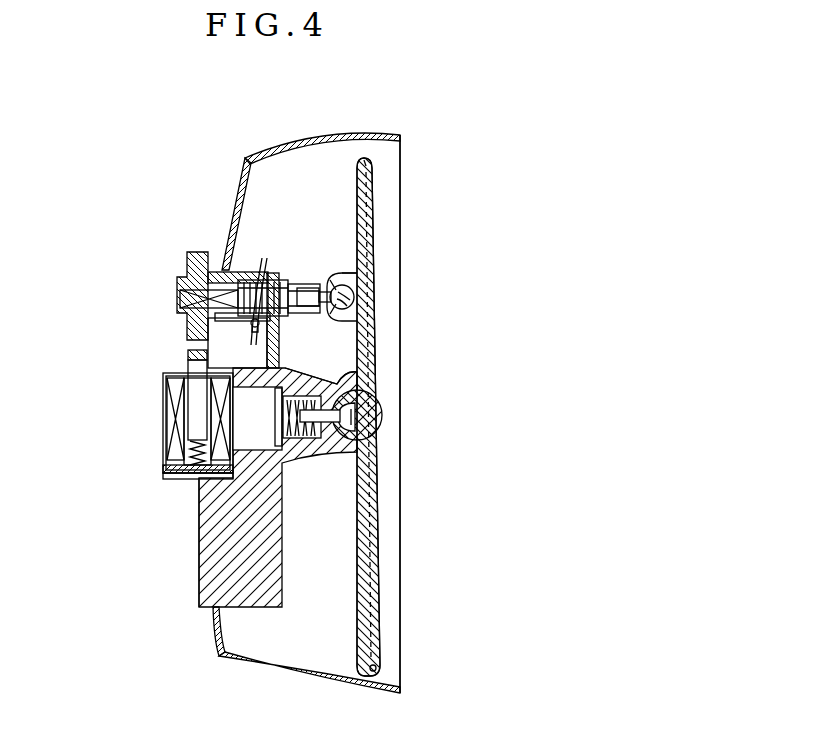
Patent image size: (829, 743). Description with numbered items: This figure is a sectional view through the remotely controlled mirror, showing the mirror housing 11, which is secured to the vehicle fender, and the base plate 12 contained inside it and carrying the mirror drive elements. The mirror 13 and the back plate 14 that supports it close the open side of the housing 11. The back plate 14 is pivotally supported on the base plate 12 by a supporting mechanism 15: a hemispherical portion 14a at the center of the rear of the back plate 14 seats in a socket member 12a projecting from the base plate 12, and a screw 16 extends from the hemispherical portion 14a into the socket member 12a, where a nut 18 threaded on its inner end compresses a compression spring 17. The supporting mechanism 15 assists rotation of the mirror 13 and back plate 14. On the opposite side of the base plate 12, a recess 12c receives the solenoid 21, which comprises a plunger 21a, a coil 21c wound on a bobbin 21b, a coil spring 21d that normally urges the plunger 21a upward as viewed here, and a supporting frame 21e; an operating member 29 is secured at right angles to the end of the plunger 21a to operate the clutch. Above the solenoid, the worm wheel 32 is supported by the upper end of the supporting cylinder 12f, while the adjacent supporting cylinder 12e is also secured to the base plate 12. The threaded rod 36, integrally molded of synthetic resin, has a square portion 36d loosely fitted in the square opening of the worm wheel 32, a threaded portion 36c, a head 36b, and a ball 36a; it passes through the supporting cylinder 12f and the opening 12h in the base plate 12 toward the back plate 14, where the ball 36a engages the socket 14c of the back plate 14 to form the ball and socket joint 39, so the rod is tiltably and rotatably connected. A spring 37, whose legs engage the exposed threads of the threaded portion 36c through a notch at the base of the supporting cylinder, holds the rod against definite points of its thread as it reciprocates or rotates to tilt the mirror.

The mirror housing 11 is at (386, 133).
The base plate 12 is at (265, 590).
The socket member 12a is at (348, 375).
The recess 12c is at (198, 493).
The supporting cylinder 12e is at (250, 331).
The supporting cylinder 12f is at (233, 273).
The opening 12h is at (303, 302).
The mirror 13 is at (372, 286).
The back plate 14 is at (371, 178).
The hemispherical portion 14a is at (360, 428).
The socket 14c is at (355, 275).
The supporting mechanism 15 is at (338, 471).
The screw 16 is at (338, 447).
The compression spring 17 is at (294, 441).
The nut 18 is at (276, 431).
The solenoid 21 is at (152, 383).
The plunger 21a is at (194, 366).
The bobbin 21b is at (165, 469).
The coil 21c is at (167, 415).
The coil spring 21d is at (188, 452).
The supporting frame 21e is at (166, 477).
The operating member 29 is at (189, 345).
The worm wheel 32 is at (188, 261).
The threaded rod 36 is at (309, 353).
The ball 36a is at (354, 298).
The head 36b is at (325, 290).
The threaded portion 36c is at (273, 274).
The square portion 36d is at (186, 298).
The spring 37 is at (256, 318).
The ball and socket joint 39 is at (344, 254).